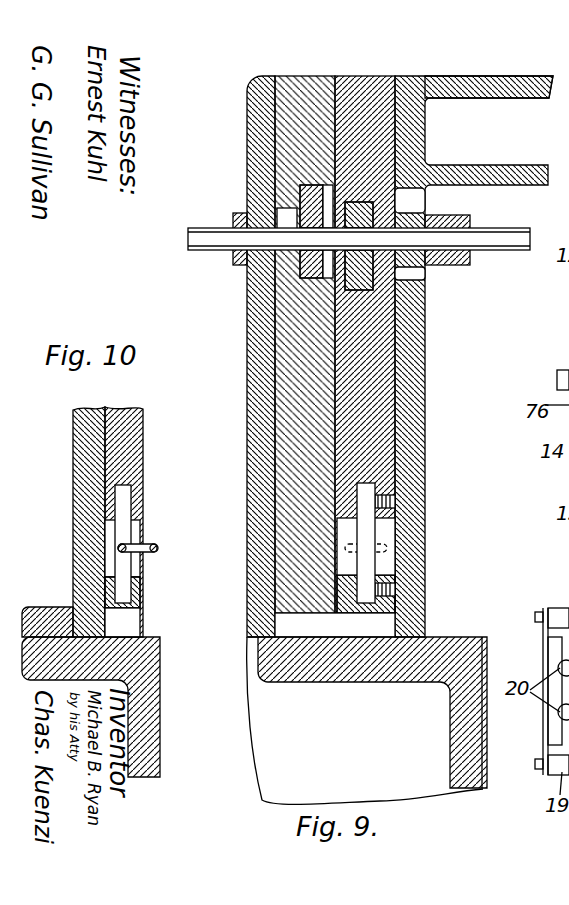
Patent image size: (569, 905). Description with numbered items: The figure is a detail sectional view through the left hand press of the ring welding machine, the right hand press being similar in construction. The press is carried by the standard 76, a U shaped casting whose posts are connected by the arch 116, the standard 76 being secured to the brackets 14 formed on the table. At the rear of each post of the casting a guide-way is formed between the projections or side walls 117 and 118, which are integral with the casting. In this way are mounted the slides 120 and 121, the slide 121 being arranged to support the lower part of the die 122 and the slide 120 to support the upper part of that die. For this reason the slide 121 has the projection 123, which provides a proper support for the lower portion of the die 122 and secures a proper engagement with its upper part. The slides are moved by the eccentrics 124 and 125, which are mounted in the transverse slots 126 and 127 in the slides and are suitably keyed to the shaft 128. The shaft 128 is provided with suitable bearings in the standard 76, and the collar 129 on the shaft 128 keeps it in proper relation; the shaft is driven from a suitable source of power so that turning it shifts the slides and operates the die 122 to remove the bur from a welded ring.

In FIG. 9, the brackets 14 is at (367, 672).
In FIG. 10, the brackets 14 is at (105, 665).
In FIG. 10, the standard 76 is at (68, 622).
In FIG. 9, the arch 116 is at (512, 84).
In FIG. 9, the side wall 117 is at (257, 468).
In FIG. 9, the side wall 118 is at (420, 466).
In FIG. 9, the slide 120 is at (372, 88).
In FIG. 10, the slide 120 is at (130, 446).
In FIG. 9, the slide 121 is at (300, 88).
In FIG. 9, the die 122 is at (362, 538).
In FIG. 10, the die 122 is at (128, 536).
In FIG. 9, the projection 123 is at (346, 600).
In FIG. 10, the projection 123 is at (141, 598).
In FIG. 9, the eccentric 124 is at (303, 200).
In FIG. 9, the eccentric 125 is at (382, 204).
In FIG. 9, the transverse slot 126 is at (308, 282).
In FIG. 9, the transverse slot 127 is at (393, 297).
In FIG. 9, the shaft 128 is at (560, 251).
In FIG. 9, the collar 129 is at (470, 257).